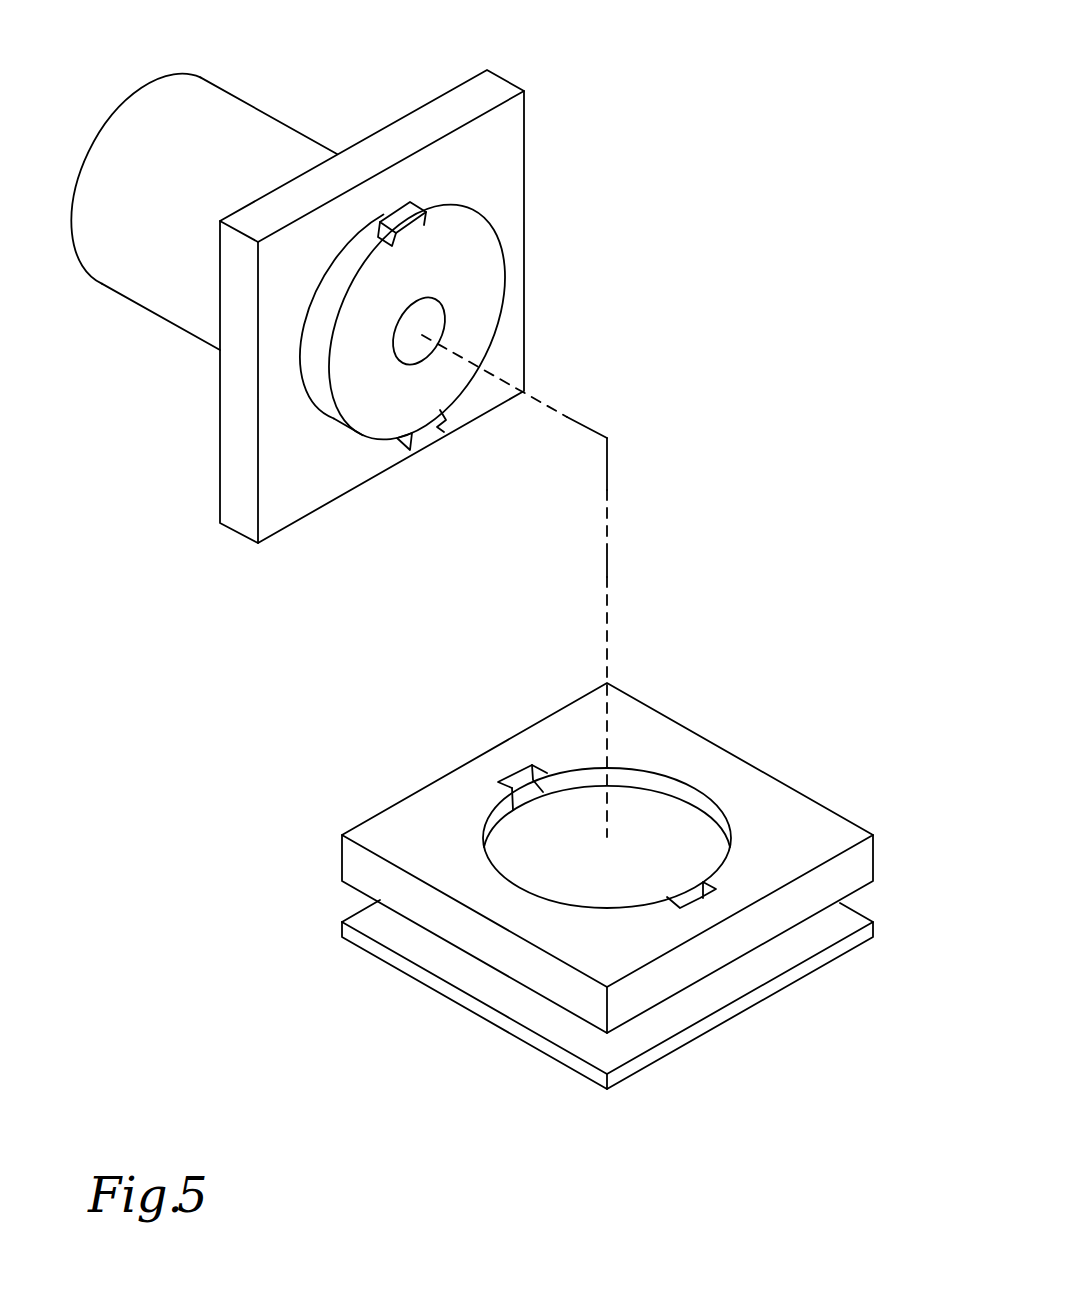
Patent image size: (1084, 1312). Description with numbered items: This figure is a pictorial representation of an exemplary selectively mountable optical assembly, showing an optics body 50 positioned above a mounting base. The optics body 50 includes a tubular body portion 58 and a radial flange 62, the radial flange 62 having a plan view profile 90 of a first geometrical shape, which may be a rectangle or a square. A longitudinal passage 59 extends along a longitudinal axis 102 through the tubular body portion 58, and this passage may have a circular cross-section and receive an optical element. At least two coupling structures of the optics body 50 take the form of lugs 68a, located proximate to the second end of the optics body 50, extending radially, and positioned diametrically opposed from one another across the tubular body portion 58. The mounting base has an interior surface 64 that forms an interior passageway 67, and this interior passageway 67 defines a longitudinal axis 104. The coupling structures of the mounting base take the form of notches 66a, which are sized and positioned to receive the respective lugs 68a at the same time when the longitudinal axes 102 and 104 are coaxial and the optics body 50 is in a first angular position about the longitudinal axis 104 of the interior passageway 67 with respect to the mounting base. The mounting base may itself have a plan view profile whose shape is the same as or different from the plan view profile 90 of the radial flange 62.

The optics body 50 is at (645, 127).
The tubular body portion 58 is at (253, 118).
The radial flange 62 is at (435, 110).
The plan view profile 90 is at (255, 446).
The lugs 68a is at (412, 228).
The longitudinal passage 59 is at (432, 319).
The longitudinal axis 102 is at (587, 420).
The longitudinal axis 104 is at (608, 557).
The interior surface 64 is at (663, 782).
The interior passageway 67 is at (575, 824).
The notches 66a is at (532, 765).